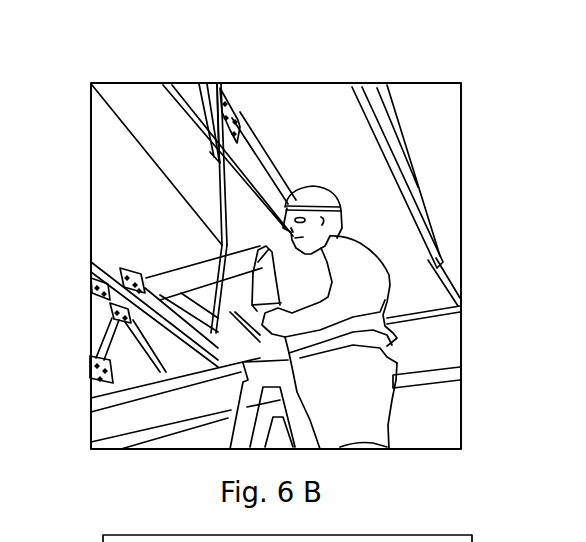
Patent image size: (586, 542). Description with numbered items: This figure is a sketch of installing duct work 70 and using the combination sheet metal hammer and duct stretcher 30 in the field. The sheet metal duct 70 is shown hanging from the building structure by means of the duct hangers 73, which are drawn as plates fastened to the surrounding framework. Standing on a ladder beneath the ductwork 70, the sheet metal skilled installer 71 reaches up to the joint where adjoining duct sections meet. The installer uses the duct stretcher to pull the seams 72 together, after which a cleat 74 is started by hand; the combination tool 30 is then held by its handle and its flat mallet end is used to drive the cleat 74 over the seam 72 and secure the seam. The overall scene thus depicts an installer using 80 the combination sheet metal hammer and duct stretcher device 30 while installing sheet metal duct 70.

The combination sheet metal hammer and duct stretcher device 30 is at (228, 308).
The sheet metal duct 70 is at (123, 222).
The sheet metal skilled installer 71 is at (368, 260).
The seams 72 is at (226, 196).
The duct hangers 73 is at (228, 130).
The cleat 74 is at (218, 122).
The installer using the device 80 is at (495, 460).